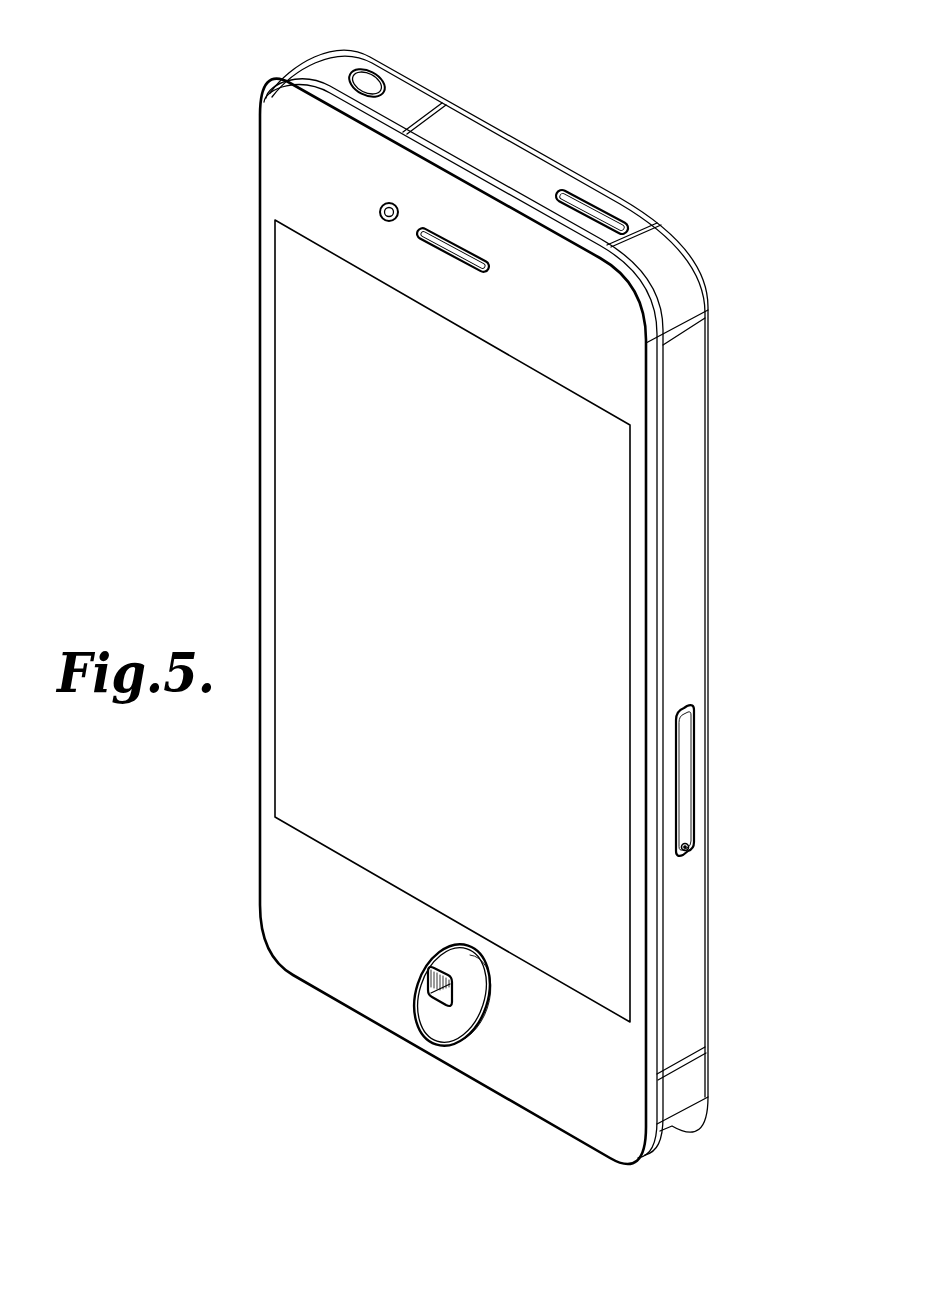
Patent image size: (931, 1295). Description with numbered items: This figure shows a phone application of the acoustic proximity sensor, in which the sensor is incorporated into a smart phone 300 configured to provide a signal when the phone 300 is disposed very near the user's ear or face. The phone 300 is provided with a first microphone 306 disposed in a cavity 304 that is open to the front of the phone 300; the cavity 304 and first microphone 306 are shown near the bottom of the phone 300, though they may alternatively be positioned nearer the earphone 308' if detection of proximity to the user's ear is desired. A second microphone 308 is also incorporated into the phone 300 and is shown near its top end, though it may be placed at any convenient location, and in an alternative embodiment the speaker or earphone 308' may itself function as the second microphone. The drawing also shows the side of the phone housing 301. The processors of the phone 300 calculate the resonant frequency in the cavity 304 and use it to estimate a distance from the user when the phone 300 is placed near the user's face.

The smart phone 300 is at (178, 241).
The housing / band 301 is at (637, 565).
The cavity 304 is at (417, 960).
The first microphone 306 is at (430, 993).
The second microphone 308 is at (613, 168).
The earphone 308' is at (467, 154).